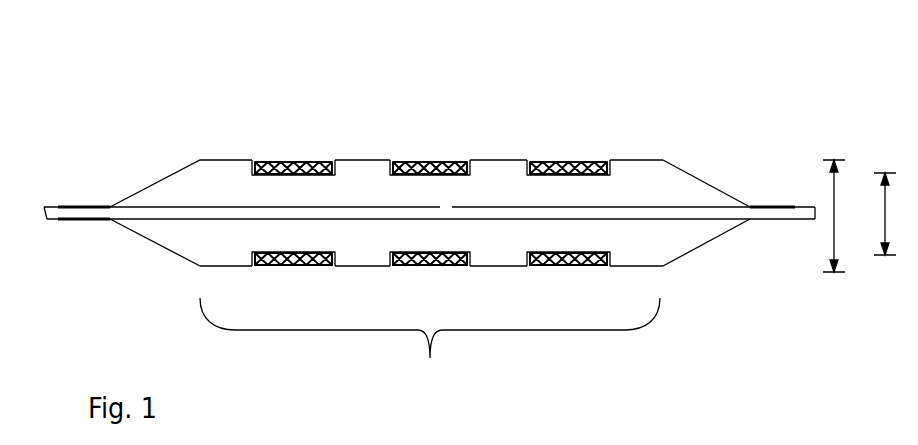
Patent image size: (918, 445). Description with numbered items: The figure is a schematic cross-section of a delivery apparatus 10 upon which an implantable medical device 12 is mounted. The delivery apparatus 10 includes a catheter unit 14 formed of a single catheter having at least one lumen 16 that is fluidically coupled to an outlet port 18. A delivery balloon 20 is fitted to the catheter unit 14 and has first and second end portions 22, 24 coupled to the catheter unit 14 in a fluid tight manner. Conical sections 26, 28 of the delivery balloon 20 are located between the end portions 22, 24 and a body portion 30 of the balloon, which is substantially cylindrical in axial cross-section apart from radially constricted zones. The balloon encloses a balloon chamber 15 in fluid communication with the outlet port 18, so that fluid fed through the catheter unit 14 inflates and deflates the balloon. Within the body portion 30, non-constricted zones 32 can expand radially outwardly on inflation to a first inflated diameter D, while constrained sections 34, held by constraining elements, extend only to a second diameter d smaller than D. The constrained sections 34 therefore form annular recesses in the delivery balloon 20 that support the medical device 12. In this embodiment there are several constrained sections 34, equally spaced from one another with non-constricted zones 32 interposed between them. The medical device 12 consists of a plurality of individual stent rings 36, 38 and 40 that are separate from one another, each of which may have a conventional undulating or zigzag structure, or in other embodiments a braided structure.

The delivery apparatus 10 is at (632, 70).
The implantable medical device 12 is at (273, 103).
The catheter unit 14 is at (77, 237).
The balloon chamber 15 is at (374, 180).
The lumen 16 is at (44, 206).
The outlet port 18 is at (445, 200).
The delivery balloon 20 is at (698, 143).
The first end portion 22 is at (76, 206).
The second end portion 24 is at (763, 206).
The conical section 26 is at (152, 243).
The conical section 28 is at (713, 242).
The body portion 30 is at (430, 319).
The non-constricted zone 32 is at (210, 160).
The constrained section 34 is at (250, 266).
The stent ring 36 is at (295, 266).
The stent ring 38 is at (432, 266).
The stent ring 40 is at (557, 266).